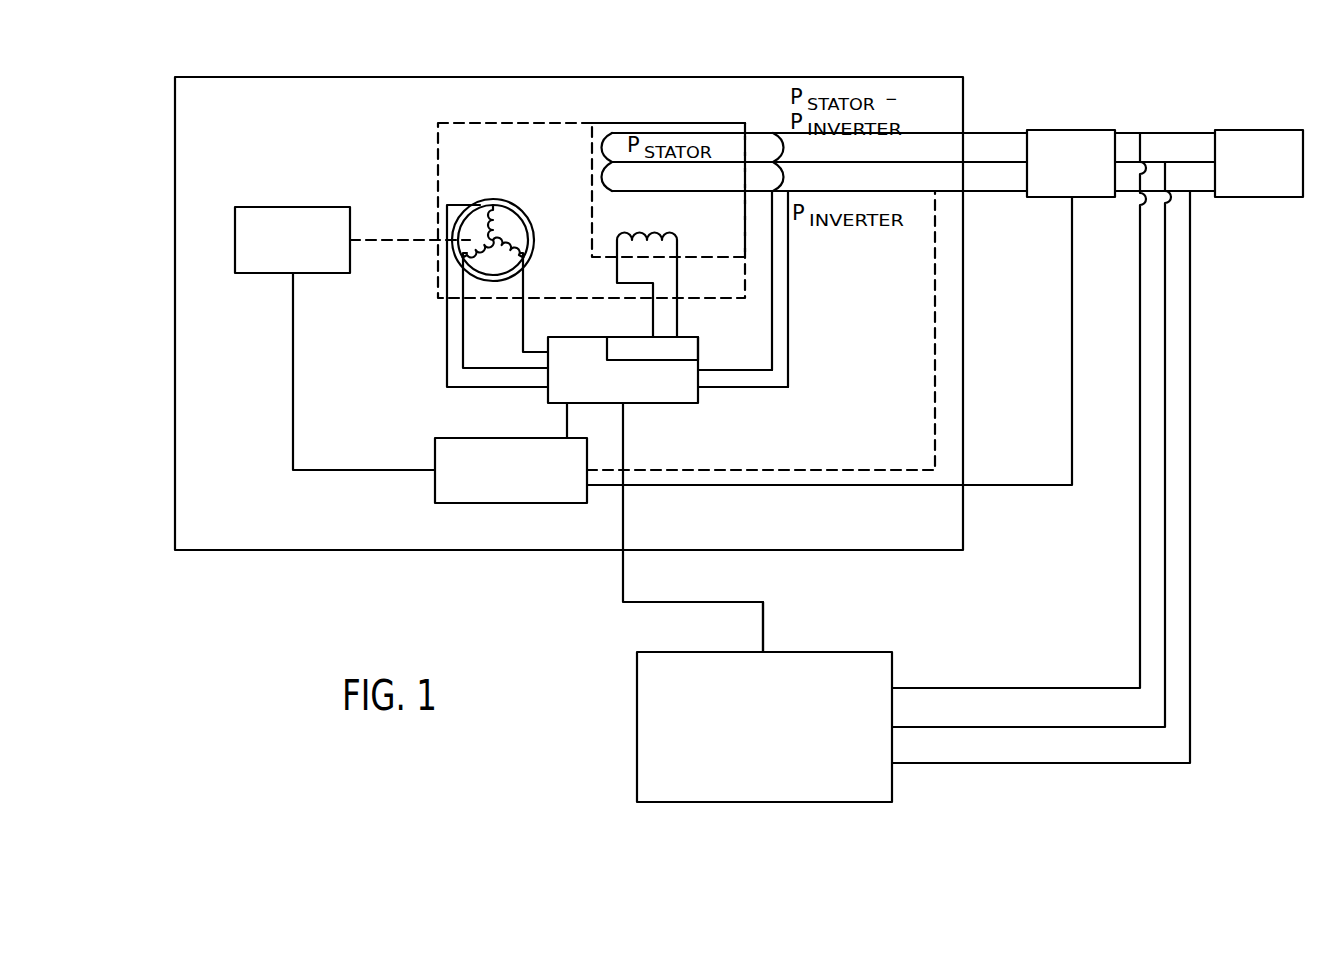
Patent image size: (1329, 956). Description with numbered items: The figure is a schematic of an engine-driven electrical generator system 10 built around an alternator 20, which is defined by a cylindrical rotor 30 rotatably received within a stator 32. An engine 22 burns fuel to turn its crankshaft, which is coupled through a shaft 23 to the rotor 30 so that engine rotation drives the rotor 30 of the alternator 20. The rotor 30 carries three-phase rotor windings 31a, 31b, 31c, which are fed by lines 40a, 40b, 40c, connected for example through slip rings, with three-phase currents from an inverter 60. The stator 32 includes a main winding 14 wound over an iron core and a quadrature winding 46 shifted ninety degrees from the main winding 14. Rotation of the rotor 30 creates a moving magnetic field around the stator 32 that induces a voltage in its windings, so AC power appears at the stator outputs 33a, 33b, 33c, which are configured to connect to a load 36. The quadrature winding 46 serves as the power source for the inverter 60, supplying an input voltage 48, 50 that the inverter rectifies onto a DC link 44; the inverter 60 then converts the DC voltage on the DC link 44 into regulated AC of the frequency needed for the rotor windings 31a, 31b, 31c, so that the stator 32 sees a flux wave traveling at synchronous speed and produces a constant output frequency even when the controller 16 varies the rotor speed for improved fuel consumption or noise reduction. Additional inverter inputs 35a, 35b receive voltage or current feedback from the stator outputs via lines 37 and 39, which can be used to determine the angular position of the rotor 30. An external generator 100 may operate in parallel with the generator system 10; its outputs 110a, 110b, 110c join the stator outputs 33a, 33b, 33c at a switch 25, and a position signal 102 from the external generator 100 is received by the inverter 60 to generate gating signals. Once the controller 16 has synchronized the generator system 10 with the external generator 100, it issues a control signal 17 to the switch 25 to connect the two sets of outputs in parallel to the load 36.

The engine-driven electrical generator system 10 is at (175, 317).
The main winding 14 is at (607, 143).
The controller 16 is at (508, 505).
The control signal 17 is at (1071, 340).
The alternator 20 is at (505, 123).
The engine 22 is at (294, 207).
The shaft 23 is at (399, 240).
The switch 25 is at (1074, 130).
The rotor 30 is at (529, 254).
The rotor winding 31a is at (504, 205).
The rotor winding 31b is at (525, 218).
The rotor winding 31c is at (466, 251).
The stator 32 is at (472, 203).
The stator output 33a is at (771, 132).
The stator output 33b is at (788, 162).
The stator output 33c is at (788, 191).
The inverter input 35a is at (770, 368).
The inverter input 35b is at (788, 390).
The load 36 is at (1263, 130).
The line 37 is at (771, 232).
The line 39 is at (789, 292).
The line 40a is at (536, 348).
The line 40b is at (503, 366).
The line 40c is at (498, 390).
The DC link 44 is at (607, 350).
The quadrature winding 46 is at (648, 238).
The input voltage 48 is at (652, 305).
The input voltage 50 is at (678, 305).
The inverter 60 is at (655, 404).
The external generator 100 is at (637, 725).
The position signal 102 is at (765, 630).
The generator output 110a is at (892, 688).
The generator output 110b is at (892, 727).
The generator output 110c is at (892, 763).